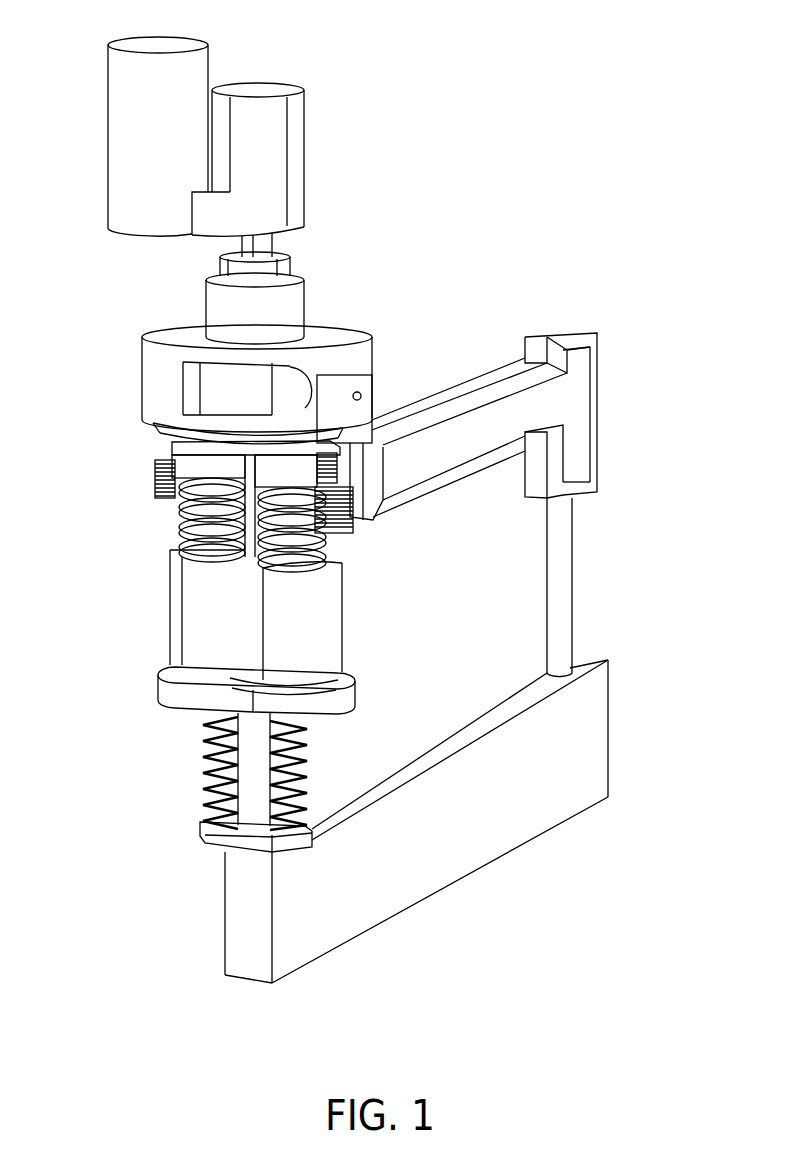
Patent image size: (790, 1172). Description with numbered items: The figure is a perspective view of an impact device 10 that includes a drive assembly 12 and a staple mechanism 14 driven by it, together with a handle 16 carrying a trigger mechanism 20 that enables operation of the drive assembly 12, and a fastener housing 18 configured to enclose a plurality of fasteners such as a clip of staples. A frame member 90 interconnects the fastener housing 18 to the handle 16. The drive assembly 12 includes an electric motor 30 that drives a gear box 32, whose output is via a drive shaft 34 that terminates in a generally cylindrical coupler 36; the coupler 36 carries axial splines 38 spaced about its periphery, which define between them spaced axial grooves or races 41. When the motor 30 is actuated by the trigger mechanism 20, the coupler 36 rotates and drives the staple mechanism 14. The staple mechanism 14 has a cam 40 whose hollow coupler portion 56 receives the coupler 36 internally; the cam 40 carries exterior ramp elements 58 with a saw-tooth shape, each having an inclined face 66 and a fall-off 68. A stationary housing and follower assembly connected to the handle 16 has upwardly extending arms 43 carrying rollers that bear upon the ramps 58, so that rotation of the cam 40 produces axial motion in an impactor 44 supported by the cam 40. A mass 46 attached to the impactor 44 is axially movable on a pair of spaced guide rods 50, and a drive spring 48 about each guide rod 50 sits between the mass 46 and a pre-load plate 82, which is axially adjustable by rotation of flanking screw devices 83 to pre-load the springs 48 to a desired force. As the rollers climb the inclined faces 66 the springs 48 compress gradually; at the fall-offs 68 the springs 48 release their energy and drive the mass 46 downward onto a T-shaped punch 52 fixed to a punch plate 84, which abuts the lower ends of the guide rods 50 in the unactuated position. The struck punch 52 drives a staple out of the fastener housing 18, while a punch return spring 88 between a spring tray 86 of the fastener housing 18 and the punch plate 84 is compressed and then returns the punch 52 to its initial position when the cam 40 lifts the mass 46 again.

The impact device 10 is at (470, 309).
The drive assembly 12 is at (317, 209).
The staple mechanism 14 is at (136, 598).
The handle 16 is at (630, 392).
The fastener housing 18 is at (629, 719).
The trigger mechanism 20 is at (440, 487).
The electric motor 30 is at (123, 198).
The gear box 32 is at (297, 127).
The drive shaft 34 is at (247, 238).
The coupler 36 is at (235, 280).
The axial splines 38 is at (295, 270).
The cam 40 is at (385, 326).
The axial grooves or races 41 is at (290, 250).
The upwardly extending arms 43 is at (363, 402).
The impactor 44 is at (177, 547).
The mass 46 is at (328, 627).
The drive spring 48 is at (330, 545).
The guide rods 50 is at (312, 687).
The punch 52 is at (253, 773).
The coupler portion 56 is at (283, 322).
The exterior ramp elements 58 is at (155, 427).
The inclined face 66 is at (155, 427).
The fall-off 68 is at (190, 393).
The pre-load plate 82 is at (165, 460).
The flanking screw devices 83 is at (157, 493).
The punch plate 84 is at (345, 707).
The spring tray 86 is at (300, 840).
The punch return spring 88 is at (203, 785).
The frame member 90 is at (573, 580).